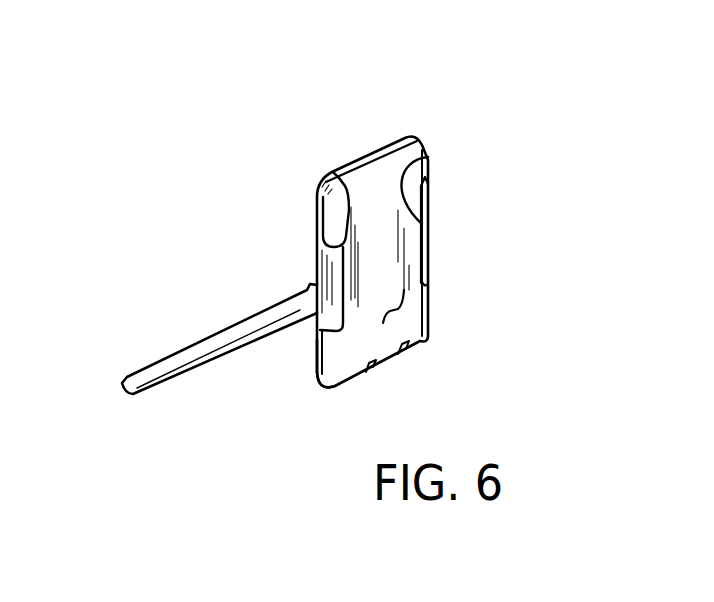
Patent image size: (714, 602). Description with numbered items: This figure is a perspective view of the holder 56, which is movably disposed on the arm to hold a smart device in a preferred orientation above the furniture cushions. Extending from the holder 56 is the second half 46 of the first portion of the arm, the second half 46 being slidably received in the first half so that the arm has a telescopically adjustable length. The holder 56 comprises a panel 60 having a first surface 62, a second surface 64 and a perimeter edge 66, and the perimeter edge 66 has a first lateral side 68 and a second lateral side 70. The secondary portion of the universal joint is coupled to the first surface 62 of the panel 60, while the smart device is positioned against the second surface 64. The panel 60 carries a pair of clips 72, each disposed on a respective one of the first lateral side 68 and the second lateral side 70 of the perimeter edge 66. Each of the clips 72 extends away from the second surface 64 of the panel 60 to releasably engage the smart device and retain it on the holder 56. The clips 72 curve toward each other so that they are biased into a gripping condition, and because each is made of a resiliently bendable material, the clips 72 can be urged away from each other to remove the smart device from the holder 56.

The second half 46 is at (197, 346).
The holder 56 is at (421, 124).
The panel 60 is at (373, 188).
The first surface 62 is at (317, 215).
The second surface 64 is at (400, 308).
The perimeter edge 66 is at (320, 343).
The first lateral side 68 is at (322, 376).
The second lateral side 70 is at (427, 307).
The clips 72 is at (342, 180).